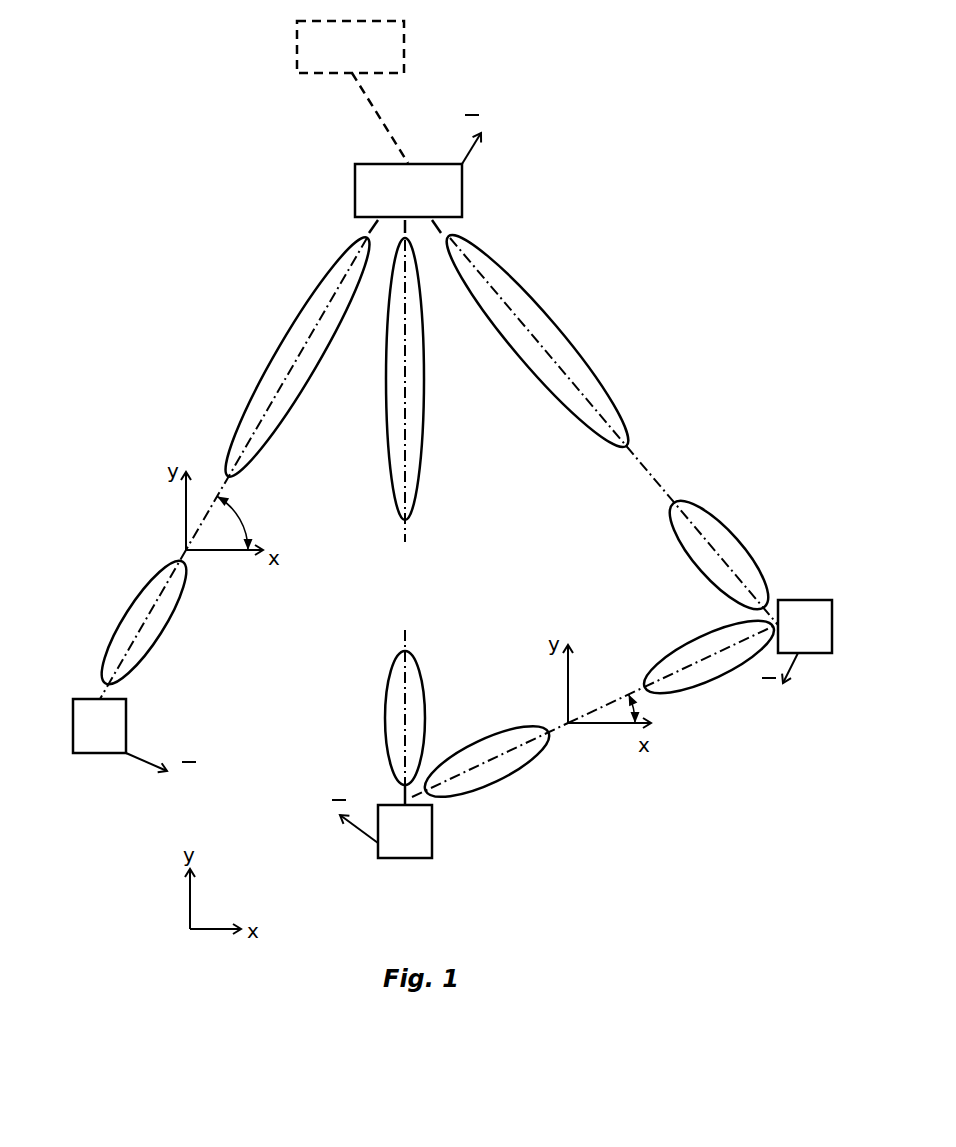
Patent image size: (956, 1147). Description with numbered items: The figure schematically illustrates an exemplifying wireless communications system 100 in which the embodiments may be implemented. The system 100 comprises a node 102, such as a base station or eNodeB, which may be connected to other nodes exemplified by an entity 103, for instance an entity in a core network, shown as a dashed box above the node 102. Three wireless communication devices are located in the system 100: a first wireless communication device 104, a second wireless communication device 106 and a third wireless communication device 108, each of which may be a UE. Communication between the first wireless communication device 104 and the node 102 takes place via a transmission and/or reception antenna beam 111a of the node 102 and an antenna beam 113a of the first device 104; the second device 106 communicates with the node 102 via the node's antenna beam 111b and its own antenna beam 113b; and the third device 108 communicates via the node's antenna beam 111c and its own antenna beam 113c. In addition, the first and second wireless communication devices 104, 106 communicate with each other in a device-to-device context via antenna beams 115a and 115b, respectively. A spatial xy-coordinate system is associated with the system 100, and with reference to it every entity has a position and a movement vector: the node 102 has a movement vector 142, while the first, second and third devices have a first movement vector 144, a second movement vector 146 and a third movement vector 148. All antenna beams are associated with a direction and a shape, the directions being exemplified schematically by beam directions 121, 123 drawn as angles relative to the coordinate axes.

The wireless communications system 100 is at (529, 512).
The node 102 is at (355, 182).
The entity 103 is at (297, 56).
The first wireless communication device 104 is at (432, 822).
The second wireless communication device 106 is at (800, 600).
The third wireless communication device 108 is at (126, 717).
The antenna beam of the node 111a is at (387, 435).
The antenna beam of the node 111b is at (493, 267).
The antenna beam of the node 111c is at (317, 295).
The antenna beam of the first wireless communication device 113a is at (385, 692).
The antenna beam of the second wireless communication device 113b is at (735, 540).
The antenna beam of the third wireless communication device 113c is at (113, 630).
The antenna beam 115a is at (523, 768).
The antenna beam 115b is at (703, 637).
The beam direction 121 is at (640, 706).
The beam direction 123 is at (240, 518).
The movement vector 142 is at (477, 140).
The first movement vector 144 is at (355, 832).
The second movement vector 146 is at (790, 672).
The third movement vector 148 is at (148, 764).